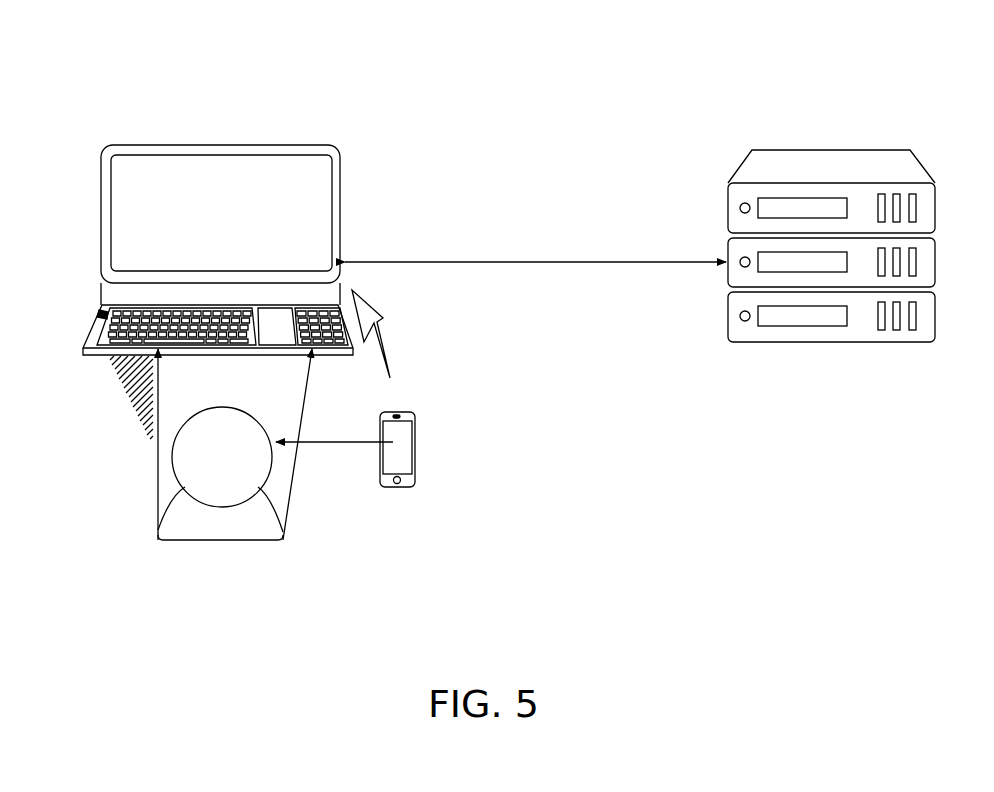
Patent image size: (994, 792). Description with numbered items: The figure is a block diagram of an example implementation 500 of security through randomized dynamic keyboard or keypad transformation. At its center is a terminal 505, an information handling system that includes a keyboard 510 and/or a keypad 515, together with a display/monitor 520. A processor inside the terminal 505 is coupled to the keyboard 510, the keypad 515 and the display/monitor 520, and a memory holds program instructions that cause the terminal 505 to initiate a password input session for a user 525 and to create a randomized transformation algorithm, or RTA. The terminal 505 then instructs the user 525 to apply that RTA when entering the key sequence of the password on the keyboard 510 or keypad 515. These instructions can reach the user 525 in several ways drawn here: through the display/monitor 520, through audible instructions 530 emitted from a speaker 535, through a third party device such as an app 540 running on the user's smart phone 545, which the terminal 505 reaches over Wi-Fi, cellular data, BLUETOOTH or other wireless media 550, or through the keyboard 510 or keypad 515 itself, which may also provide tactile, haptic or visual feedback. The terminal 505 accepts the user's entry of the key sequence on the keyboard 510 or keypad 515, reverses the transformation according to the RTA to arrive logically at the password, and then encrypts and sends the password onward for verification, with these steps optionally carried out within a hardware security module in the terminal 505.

The example implementation 500 is at (116, 92).
The terminal 505 is at (348, 163).
The display/monitor 520 is at (325, 213).
The keyboard 510 is at (84, 343).
The speaker 535 is at (100, 313).
The audible instructions 530 is at (138, 422).
The user 525 is at (200, 530).
The keypad 515 is at (356, 305).
The wireless media 550 is at (388, 340).
The app 540 is at (405, 427).
The smart phone 545 is at (415, 478).